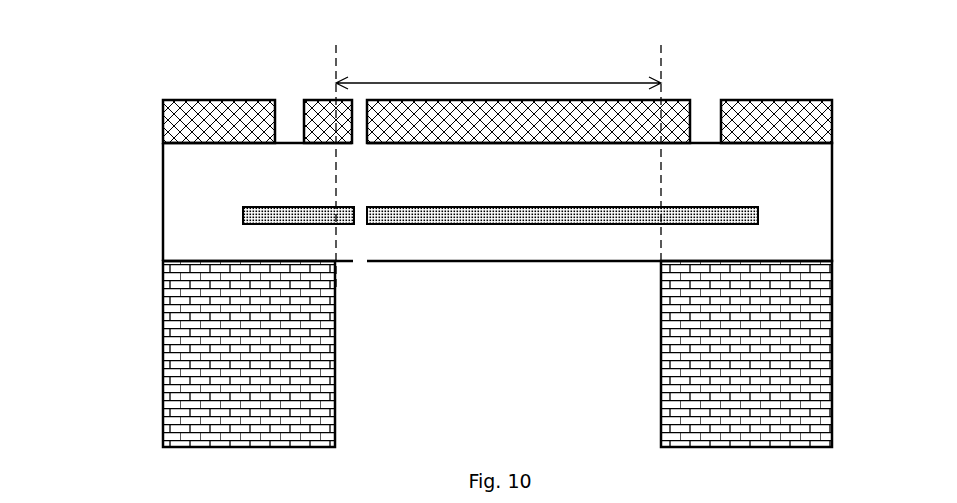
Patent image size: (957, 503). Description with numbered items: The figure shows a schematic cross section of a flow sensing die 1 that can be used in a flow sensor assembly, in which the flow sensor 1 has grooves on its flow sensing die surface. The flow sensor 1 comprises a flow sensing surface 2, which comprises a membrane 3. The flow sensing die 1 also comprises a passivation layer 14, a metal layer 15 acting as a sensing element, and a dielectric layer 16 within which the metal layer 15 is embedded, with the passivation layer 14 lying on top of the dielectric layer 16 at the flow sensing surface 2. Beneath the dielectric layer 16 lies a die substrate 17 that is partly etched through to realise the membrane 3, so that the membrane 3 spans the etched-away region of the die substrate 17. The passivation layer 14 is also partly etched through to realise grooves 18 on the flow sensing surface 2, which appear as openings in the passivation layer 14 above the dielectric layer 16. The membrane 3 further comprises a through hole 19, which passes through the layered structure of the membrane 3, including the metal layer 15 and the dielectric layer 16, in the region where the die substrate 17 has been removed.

The flow sensing die 1 is at (116, 194).
The flow sensing surface 2 is at (208, 97).
The membrane 3 is at (405, 80).
The passivation layer 14 is at (782, 115).
The metal layer 15 is at (751, 217).
The dielectric layer 16 is at (803, 237).
The die substrate 17 is at (195, 358).
The grooves 18 is at (705, 112).
The through hole 19 is at (363, 241).